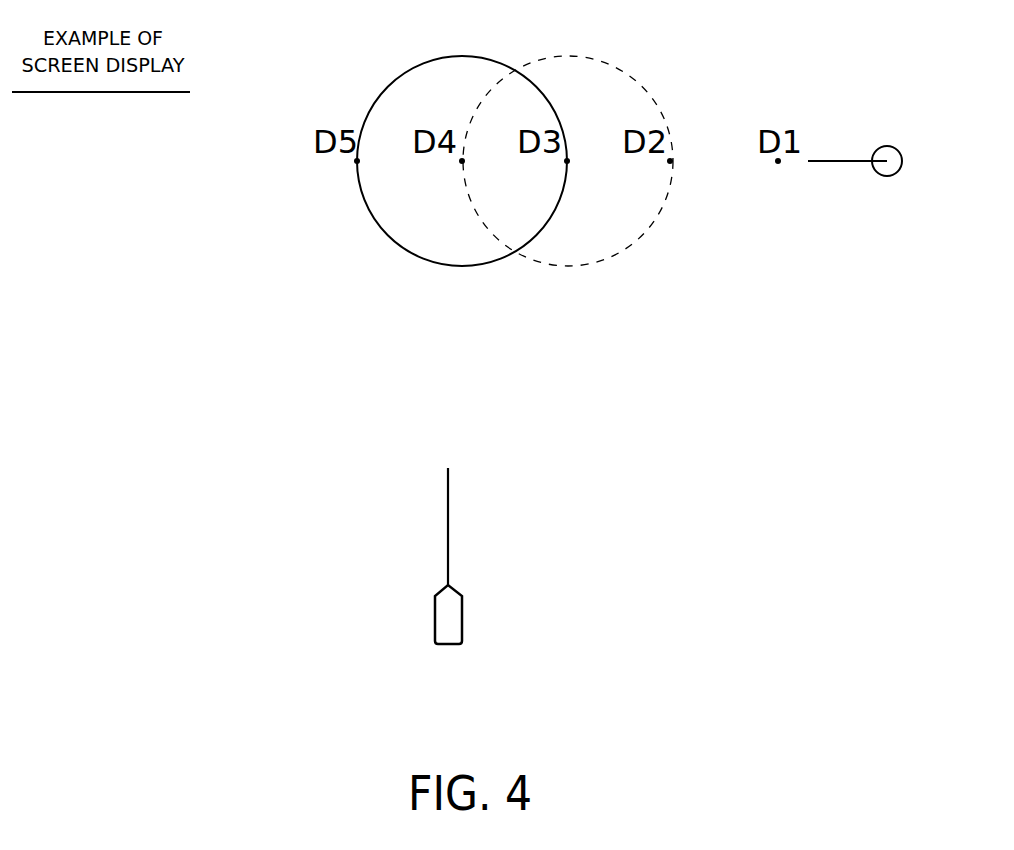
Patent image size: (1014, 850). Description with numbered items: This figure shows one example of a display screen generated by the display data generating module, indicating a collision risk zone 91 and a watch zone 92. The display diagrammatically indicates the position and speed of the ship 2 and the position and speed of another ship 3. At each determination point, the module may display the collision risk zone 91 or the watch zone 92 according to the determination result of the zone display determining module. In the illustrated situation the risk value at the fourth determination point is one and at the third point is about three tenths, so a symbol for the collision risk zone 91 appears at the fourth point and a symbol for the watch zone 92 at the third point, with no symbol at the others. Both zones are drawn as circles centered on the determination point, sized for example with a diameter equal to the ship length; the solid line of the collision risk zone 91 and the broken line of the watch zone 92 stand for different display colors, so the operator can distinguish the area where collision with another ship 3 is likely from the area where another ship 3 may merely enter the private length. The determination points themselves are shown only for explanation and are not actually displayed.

The ship 2 is at (458, 630).
The another ship 3 is at (887, 146).
The collision risk zone 91 is at (442, 265).
The watch zone 92 is at (543, 265).